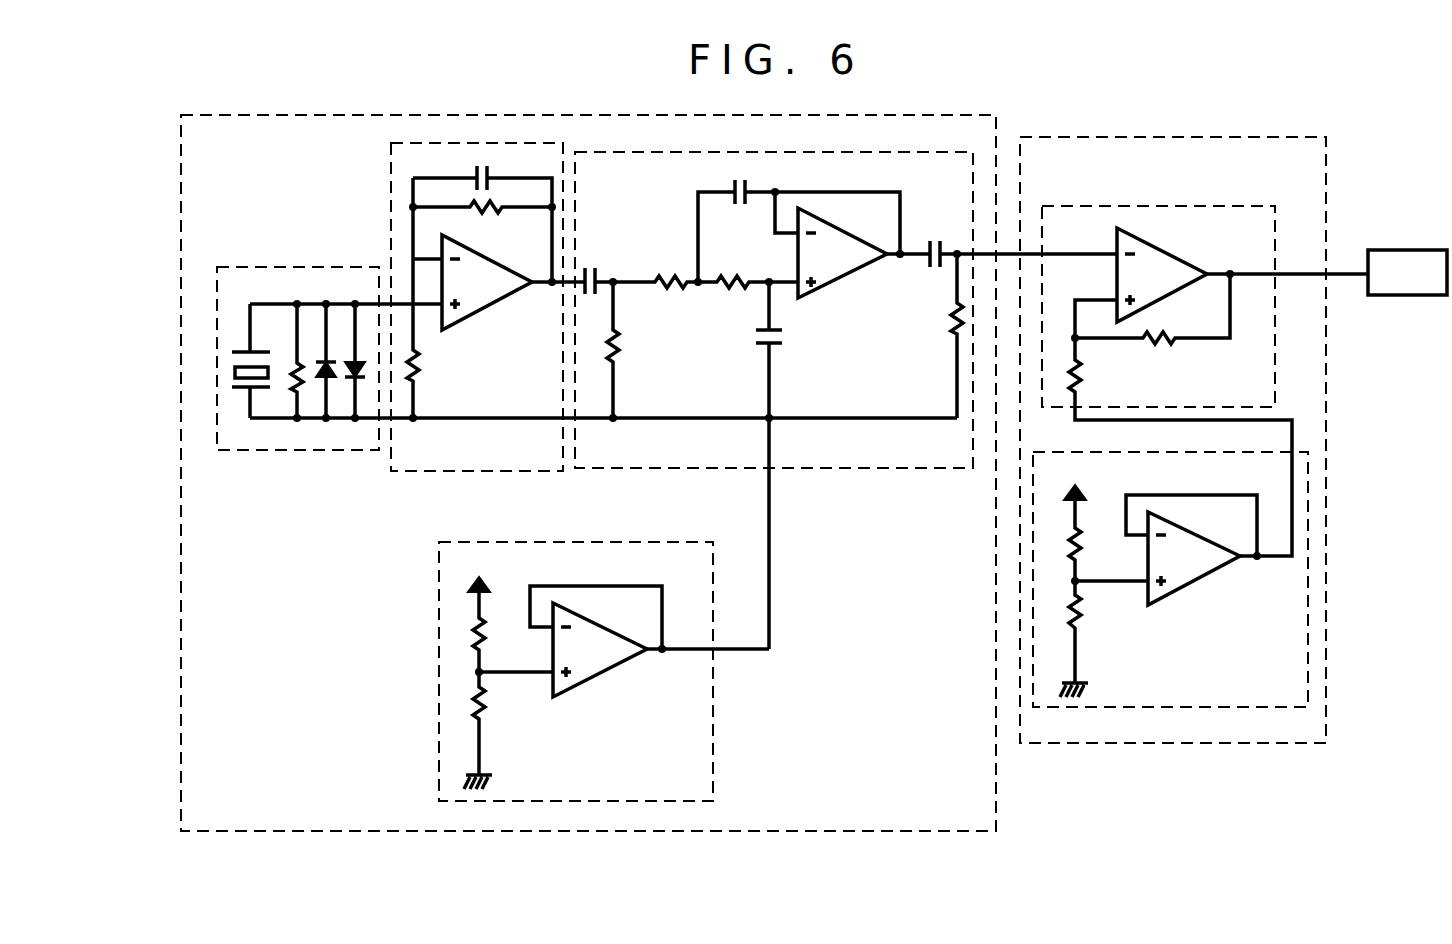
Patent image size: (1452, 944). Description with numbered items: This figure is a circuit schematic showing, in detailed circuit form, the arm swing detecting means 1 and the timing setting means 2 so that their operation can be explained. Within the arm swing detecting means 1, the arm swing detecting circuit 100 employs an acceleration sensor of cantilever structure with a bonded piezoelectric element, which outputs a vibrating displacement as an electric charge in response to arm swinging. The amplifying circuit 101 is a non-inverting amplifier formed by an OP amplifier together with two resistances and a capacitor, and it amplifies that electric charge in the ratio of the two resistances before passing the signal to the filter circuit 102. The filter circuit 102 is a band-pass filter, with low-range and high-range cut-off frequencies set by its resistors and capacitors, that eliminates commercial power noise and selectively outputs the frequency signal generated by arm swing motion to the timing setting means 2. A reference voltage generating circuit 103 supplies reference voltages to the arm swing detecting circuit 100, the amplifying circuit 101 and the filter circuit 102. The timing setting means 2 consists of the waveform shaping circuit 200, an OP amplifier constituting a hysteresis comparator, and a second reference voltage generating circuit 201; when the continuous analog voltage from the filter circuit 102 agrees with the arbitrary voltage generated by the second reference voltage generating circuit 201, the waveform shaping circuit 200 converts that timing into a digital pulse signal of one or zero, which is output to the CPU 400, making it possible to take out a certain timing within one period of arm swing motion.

The arm swing detecting means 1 is at (608, 832).
The timing setting means 2 is at (1237, 743).
The arm swing detecting circuit 100 is at (263, 268).
The amplifying circuit 101 is at (391, 183).
The filter circuit 102 is at (928, 152).
The reference voltage generating circuit 103 is at (713, 728).
The waveform shaping circuit 200 is at (1185, 206).
The second reference voltage generating circuit 201 is at (1308, 656).
The CPU 400 is at (1417, 295).